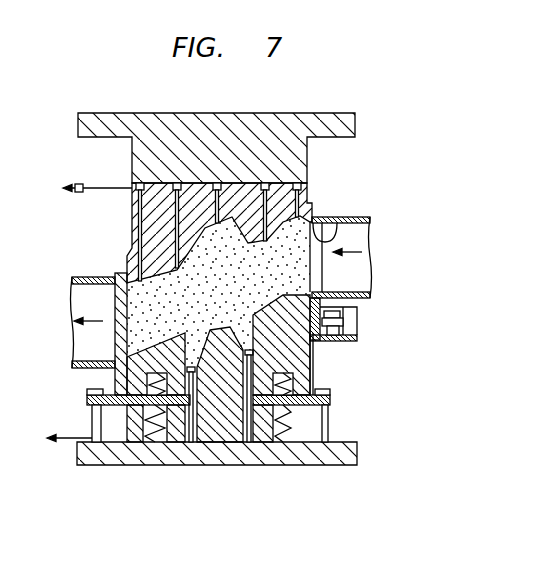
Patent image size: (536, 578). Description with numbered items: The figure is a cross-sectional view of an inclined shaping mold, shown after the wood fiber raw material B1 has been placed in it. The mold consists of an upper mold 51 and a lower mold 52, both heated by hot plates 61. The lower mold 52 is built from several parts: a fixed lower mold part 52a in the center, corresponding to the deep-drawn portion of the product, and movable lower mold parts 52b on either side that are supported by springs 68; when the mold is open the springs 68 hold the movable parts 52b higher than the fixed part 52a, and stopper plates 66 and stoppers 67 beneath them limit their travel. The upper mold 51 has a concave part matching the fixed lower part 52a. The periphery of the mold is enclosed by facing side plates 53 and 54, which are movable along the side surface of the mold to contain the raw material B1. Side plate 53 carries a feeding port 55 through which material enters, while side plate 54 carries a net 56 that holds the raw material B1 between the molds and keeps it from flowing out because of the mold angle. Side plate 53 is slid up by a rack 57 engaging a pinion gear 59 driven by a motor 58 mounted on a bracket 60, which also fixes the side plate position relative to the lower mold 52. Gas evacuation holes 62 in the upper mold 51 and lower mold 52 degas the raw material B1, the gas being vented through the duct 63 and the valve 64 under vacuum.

The upper mold 51 is at (245, 196).
The lower mold 52 is at (302, 300).
The fixed lower mold part 52a is at (223, 430).
The movable lower mold parts 52b is at (175, 386).
The side plate 53 is at (314, 210).
The side plate 54 is at (115, 273).
The feeding port 55 is at (342, 217).
The net 56 is at (86, 368).
The rack 57 is at (338, 341).
The motor 58 is at (354, 320).
The pinion gear 59 is at (338, 312).
The bracket 60 is at (318, 340).
The hot plates 61 is at (128, 116).
The gas evacuation holes 62 is at (177, 183).
The duct 63 is at (102, 186).
The valve 64 is at (75, 188).
The stopper plates 66 is at (332, 398).
The stoppers 67 is at (328, 430).
The springs 68 is at (310, 447).
The raw material B1 is at (143, 378).